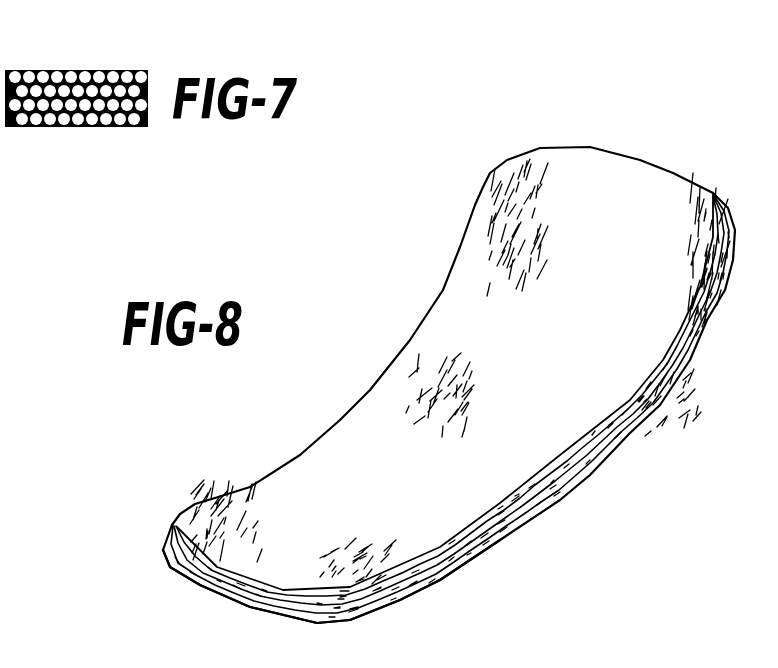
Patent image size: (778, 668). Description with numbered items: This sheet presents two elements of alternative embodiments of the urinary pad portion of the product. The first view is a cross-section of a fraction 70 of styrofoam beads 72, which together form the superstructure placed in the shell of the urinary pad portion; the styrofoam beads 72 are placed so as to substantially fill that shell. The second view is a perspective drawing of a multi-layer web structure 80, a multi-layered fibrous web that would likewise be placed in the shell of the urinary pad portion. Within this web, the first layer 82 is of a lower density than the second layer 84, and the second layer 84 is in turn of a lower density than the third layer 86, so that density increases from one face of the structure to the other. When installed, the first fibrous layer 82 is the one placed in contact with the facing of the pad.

In FIG. 7, the fraction of styrofoam beads 70 is at (76, 98).
In FIG. 7, the styrofoam beads 72 is at (70, 130).
In FIG. 8, the multi-layer web structure 80 is at (382, 377).
In FIG. 8, the first layer 82 is at (620, 420).
In FIG. 8, the second layer 84 is at (567, 483).
In FIG. 8, the third layer 86 is at (490, 548).